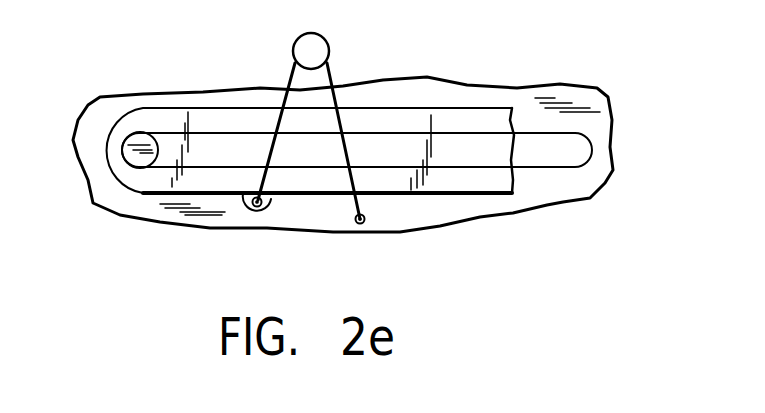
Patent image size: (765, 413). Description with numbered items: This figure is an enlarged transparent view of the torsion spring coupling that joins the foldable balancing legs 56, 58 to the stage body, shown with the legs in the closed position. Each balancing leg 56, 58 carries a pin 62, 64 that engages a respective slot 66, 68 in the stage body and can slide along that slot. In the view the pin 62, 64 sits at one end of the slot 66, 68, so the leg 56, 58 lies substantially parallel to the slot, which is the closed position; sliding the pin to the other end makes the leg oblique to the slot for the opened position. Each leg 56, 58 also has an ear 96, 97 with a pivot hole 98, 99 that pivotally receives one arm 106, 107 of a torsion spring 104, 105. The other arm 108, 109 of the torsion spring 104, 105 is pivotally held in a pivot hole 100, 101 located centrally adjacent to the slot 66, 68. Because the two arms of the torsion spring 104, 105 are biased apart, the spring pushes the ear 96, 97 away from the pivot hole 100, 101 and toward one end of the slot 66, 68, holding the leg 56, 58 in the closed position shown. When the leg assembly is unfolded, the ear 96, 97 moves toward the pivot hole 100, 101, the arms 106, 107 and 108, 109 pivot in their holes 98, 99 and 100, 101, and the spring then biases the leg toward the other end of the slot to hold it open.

The balancing leg 56 is at (343, 176).
The balancing leg 58 is at (132, 194).
The pin 62 is at (110, 112).
The pin 64 is at (138, 134).
The slot 66 is at (349, 111).
The slot 68 is at (173, 133).
The ear 96 is at (298, 235).
The ear 97 is at (271, 204).
The pivot hole 98 is at (231, 243).
The pivot hole 99 is at (246, 206).
The pivot hole 100 is at (424, 241).
The pivot hole 101 is at (363, 226).
The torsion spring 104 is at (371, 39).
The torsion spring 105 is at (324, 40).
The arm of torsion spring 106 is at (259, 100).
The arm of torsion spring 107 is at (282, 80).
The other arm of torsion spring 108 is at (401, 130).
The other arm of torsion spring 109 is at (338, 78).